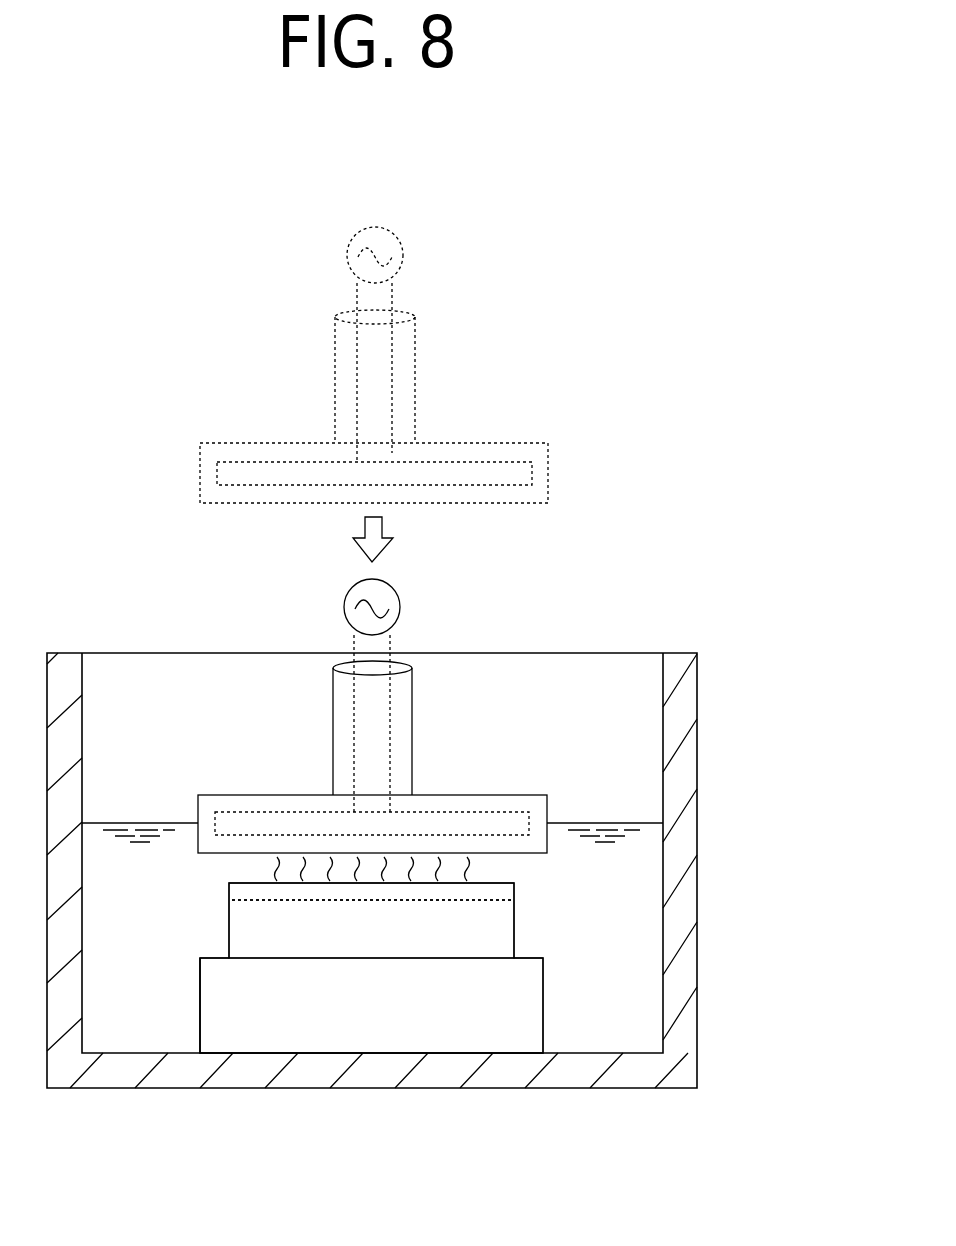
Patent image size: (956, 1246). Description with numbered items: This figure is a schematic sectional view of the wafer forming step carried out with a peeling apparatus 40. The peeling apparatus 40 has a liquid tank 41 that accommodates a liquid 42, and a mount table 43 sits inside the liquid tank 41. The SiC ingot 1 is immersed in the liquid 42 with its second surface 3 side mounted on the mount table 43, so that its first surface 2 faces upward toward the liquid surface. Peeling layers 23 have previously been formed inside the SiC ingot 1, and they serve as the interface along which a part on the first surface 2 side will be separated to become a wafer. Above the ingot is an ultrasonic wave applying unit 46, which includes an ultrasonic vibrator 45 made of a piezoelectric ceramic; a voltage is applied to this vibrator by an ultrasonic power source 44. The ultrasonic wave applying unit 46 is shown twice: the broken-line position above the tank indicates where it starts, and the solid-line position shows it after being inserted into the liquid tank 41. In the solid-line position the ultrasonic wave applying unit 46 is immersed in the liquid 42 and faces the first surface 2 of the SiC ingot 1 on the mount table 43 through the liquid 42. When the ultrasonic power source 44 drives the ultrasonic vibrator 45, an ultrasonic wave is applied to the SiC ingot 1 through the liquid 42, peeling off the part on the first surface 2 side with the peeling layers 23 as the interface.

The SiC ingot 1 is at (537, 913).
The first surface 2 is at (505, 878).
The second surface 3 is at (377, 958).
The peeling layers 23 is at (492, 908).
The peeling apparatus 40 is at (631, 435).
The liquid tank 41 is at (680, 697).
The liquid 42 is at (590, 858).
The mount table 43 is at (200, 1005).
The ultrasonic power source 44 is at (403, 253).
The ultrasonic vibrator 45 is at (511, 462).
The ultrasonic wave applying unit 46 is at (548, 483).